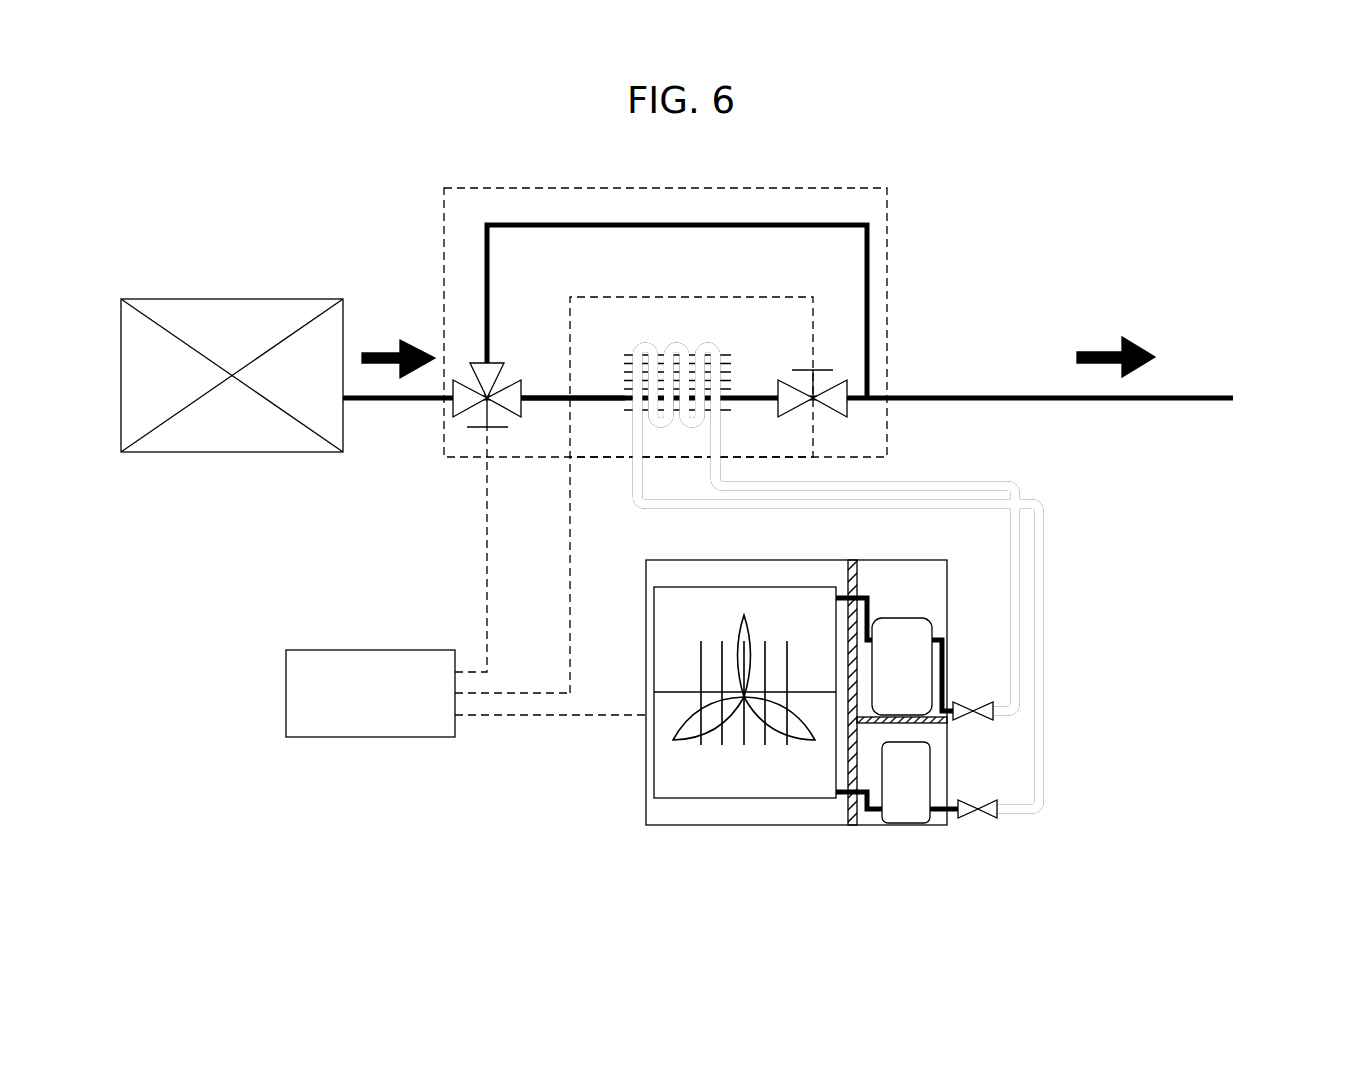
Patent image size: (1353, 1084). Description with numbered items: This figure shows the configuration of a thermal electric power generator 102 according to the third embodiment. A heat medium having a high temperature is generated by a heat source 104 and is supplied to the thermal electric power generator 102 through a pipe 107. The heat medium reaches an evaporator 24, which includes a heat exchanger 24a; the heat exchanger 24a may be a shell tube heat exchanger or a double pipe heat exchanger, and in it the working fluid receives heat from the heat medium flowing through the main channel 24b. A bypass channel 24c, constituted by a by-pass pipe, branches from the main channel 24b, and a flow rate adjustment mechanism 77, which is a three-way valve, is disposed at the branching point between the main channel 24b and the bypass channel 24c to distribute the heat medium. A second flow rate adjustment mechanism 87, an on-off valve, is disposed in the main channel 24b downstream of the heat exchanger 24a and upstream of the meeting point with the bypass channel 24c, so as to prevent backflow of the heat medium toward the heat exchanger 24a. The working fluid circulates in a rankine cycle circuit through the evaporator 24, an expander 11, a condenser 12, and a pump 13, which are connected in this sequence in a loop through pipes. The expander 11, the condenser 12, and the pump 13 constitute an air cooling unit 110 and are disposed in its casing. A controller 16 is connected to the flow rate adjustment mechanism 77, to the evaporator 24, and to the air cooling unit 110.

The thermal electric power generator 102 is at (942, 162).
The heat source 104 is at (230, 299).
The pipe 107 is at (393, 402).
The evaporator 24 is at (887, 207).
The heat exchanger 24a is at (628, 365).
The main channel 24b is at (600, 402).
The bypass channel 24c is at (682, 225).
The flow rate adjustment mechanism 77 is at (475, 429).
The second flow rate adjustment mechanism 87 is at (840, 410).
The controller 16 is at (380, 738).
The air cooling unit 110 is at (677, 833).
The expander 11 is at (893, 618).
The condenser 12 is at (742, 768).
The pump 13 is at (903, 798).